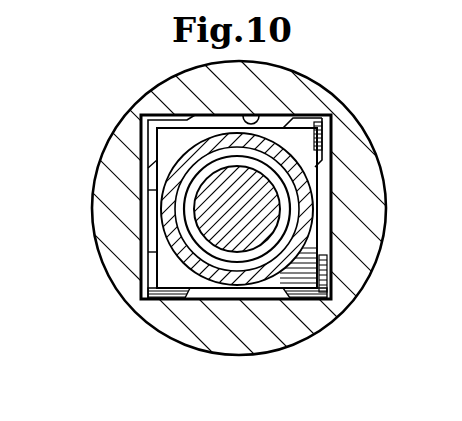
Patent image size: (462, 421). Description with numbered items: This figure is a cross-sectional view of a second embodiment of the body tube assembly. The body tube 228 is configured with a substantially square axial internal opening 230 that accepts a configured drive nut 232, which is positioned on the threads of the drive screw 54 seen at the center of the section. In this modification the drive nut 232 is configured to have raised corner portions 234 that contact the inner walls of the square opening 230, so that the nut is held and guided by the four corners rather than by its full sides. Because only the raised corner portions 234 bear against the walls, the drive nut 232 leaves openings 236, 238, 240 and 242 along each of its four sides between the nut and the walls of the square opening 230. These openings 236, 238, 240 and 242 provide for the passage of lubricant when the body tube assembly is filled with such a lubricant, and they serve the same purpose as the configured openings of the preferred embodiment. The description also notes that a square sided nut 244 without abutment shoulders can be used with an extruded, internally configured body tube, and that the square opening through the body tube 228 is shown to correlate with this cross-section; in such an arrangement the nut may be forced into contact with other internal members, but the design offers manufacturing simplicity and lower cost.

The body tube 228 is at (385, 183).
The square axial internal opening 230 is at (251, 114).
The drive nut 232 is at (310, 276).
The raised corner portions 234 is at (307, 118).
The opening 236 is at (323, 237).
The opening 238 is at (255, 293).
The opening 240 is at (150, 174).
The opening 242 is at (200, 121).
The square sided nut 244 is at (150, 190).
The drive screw 54 is at (212, 207).